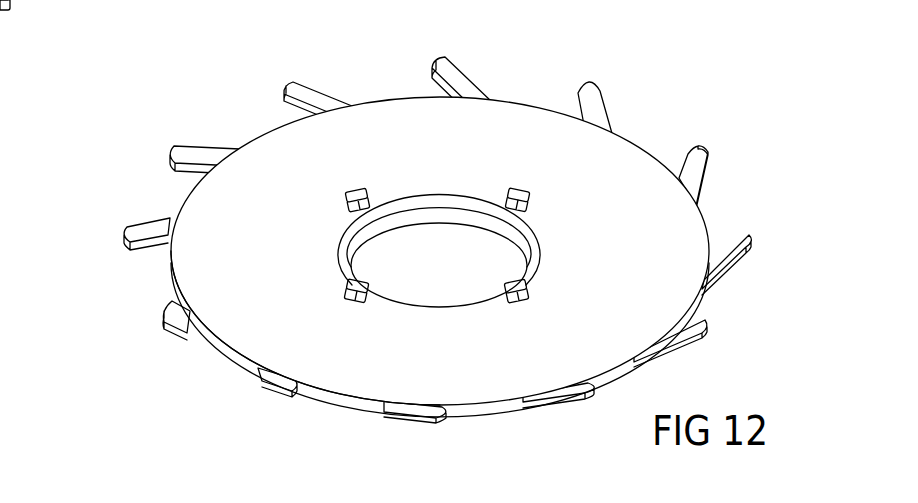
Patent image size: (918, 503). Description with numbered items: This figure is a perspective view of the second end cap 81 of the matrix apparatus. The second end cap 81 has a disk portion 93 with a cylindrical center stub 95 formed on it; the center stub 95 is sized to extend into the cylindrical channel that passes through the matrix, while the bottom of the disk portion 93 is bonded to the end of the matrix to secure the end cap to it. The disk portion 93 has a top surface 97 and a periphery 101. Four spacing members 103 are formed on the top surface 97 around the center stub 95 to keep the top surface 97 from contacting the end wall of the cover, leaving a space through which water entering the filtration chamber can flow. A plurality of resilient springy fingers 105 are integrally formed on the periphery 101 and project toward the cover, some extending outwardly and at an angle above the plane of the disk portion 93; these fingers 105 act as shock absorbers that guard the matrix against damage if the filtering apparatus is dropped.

The second end cap 81 is at (650, 90).
The disk portion 93 is at (652, 260).
The cylindrical center stub 95 is at (430, 215).
The top surface 97 is at (310, 328).
The periphery 101 is at (327, 396).
The spacing members 103 is at (352, 194).
The resilient springy fingers 105 is at (437, 58).